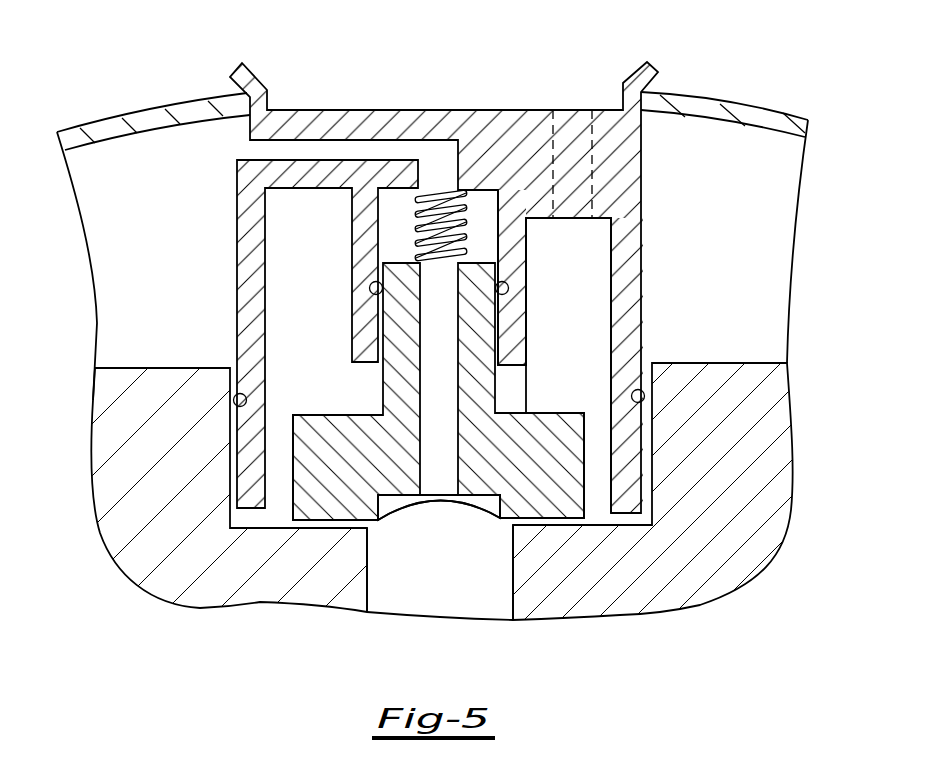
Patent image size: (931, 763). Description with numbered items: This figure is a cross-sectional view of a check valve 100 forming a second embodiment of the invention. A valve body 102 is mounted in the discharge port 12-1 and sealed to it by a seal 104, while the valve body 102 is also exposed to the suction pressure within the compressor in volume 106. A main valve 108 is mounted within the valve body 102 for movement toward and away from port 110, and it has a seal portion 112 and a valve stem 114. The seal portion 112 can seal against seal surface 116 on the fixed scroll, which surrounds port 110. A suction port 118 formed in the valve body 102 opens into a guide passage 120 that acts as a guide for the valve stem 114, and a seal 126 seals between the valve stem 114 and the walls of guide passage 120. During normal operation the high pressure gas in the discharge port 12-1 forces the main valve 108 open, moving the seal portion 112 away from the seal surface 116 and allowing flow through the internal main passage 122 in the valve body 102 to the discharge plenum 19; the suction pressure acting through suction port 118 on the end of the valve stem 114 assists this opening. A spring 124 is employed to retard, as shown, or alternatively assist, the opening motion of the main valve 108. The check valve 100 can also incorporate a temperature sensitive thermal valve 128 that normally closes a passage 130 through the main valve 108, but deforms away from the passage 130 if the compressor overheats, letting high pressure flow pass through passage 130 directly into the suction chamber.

The discharge plenum 19 is at (413, 54).
The check valve 100 is at (693, 79).
The valve body 102 is at (525, 280).
The seal 104 is at (645, 396).
The volume 106 is at (160, 261).
The main valve 108 is at (559, 473).
The port 110 is at (467, 601).
The seal portion 112 is at (548, 413).
The valve stem 114 is at (395, 394).
The seal surface 116 is at (330, 520).
The suction port 118 is at (262, 152).
The guide passage 120 is at (480, 228).
The internal main passage 122 is at (600, 166).
The spring 124 is at (466, 208).
The seal 126 is at (369, 288).
The thermal valve 128 is at (400, 505).
The passage 130 is at (437, 470).
The discharge port 12-1 is at (598, 503).